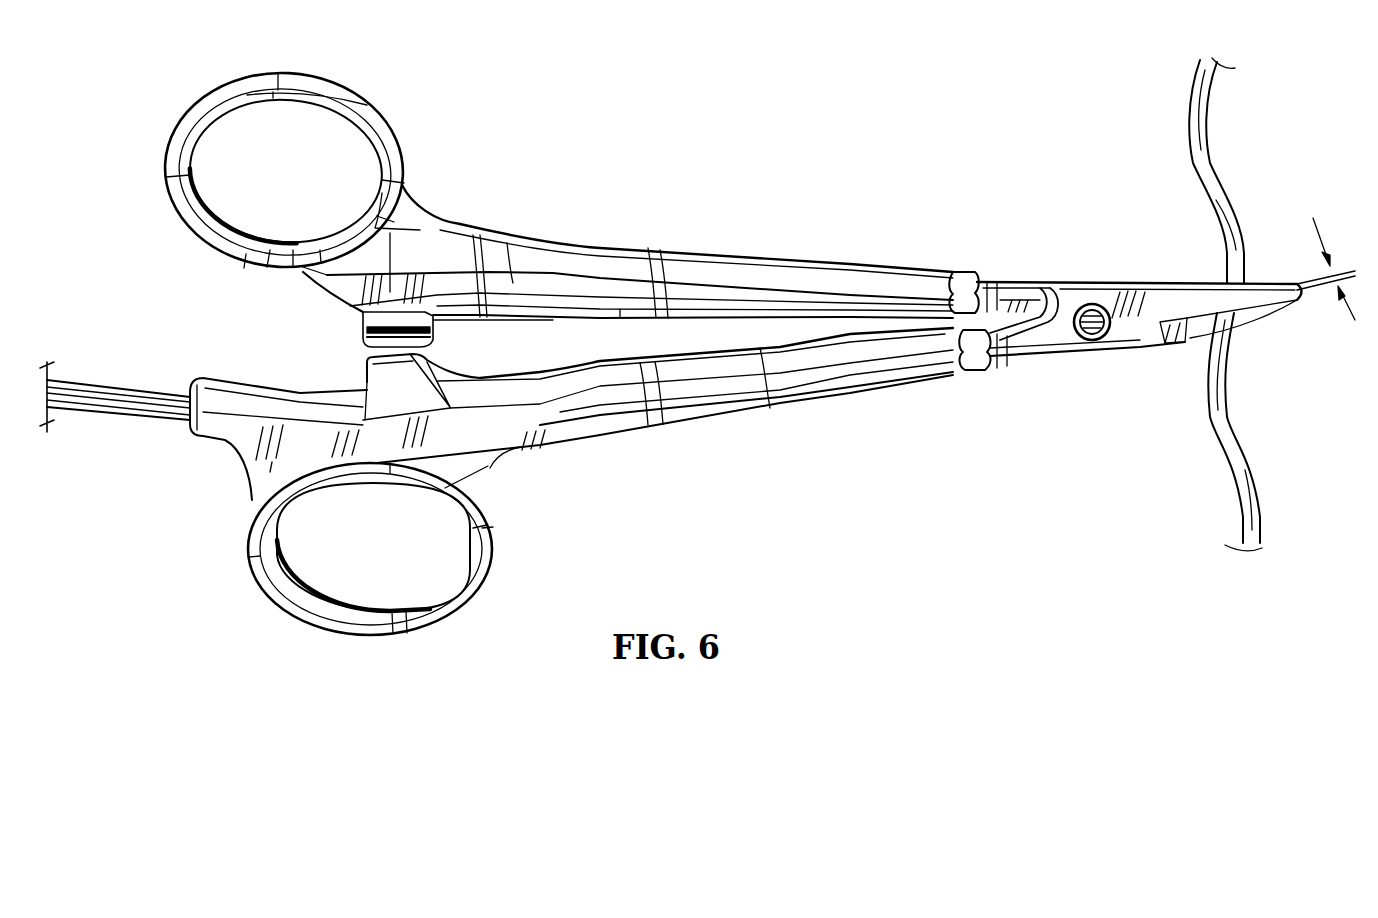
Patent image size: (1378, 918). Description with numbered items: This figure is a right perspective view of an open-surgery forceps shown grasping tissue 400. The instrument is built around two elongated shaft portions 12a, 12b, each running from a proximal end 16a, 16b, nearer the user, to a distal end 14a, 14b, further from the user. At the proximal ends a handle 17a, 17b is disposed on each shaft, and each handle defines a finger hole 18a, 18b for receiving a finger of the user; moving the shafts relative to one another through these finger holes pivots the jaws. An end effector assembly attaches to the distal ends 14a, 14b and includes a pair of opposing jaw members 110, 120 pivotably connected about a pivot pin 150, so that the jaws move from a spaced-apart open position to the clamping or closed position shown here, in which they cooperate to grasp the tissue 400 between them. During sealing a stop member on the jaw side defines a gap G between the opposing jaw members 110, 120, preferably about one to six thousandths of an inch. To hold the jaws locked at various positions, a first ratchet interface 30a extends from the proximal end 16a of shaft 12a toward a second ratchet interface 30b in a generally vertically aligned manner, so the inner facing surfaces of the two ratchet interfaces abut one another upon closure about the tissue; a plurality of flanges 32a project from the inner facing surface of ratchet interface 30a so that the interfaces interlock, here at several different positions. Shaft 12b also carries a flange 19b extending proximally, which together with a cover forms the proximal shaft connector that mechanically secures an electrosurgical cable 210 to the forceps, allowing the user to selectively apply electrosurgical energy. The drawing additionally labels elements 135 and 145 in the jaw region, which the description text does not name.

The elongated shaft portion 12a is at (735, 275).
The elongated shaft portion 12b is at (714, 385).
The distal end 14a is at (975, 270).
The distal end 14b is at (982, 368).
The proximal end 16a is at (460, 242).
The proximal end 16b is at (520, 440).
The handle 17a is at (310, 75).
The handle 17b is at (463, 555).
The finger hole 18a is at (302, 167).
The finger hole 18b is at (390, 578).
The flange 19b is at (215, 427).
The first ratchet interface 30a is at (366, 326).
The second ratchet interface 30b is at (380, 370).
The flanges 32a is at (436, 333).
The jaw member 110 is at (1272, 282).
The jaw member 120 is at (1258, 320).
The lower jaw member 135 is at (996, 358).
The upper jaw member 145 is at (990, 280).
The pivot pin 150 is at (1098, 340).
The electrosurgical cable 210 is at (110, 400).
The tissue 400 is at (1232, 232).
The gap G is at (1342, 294).